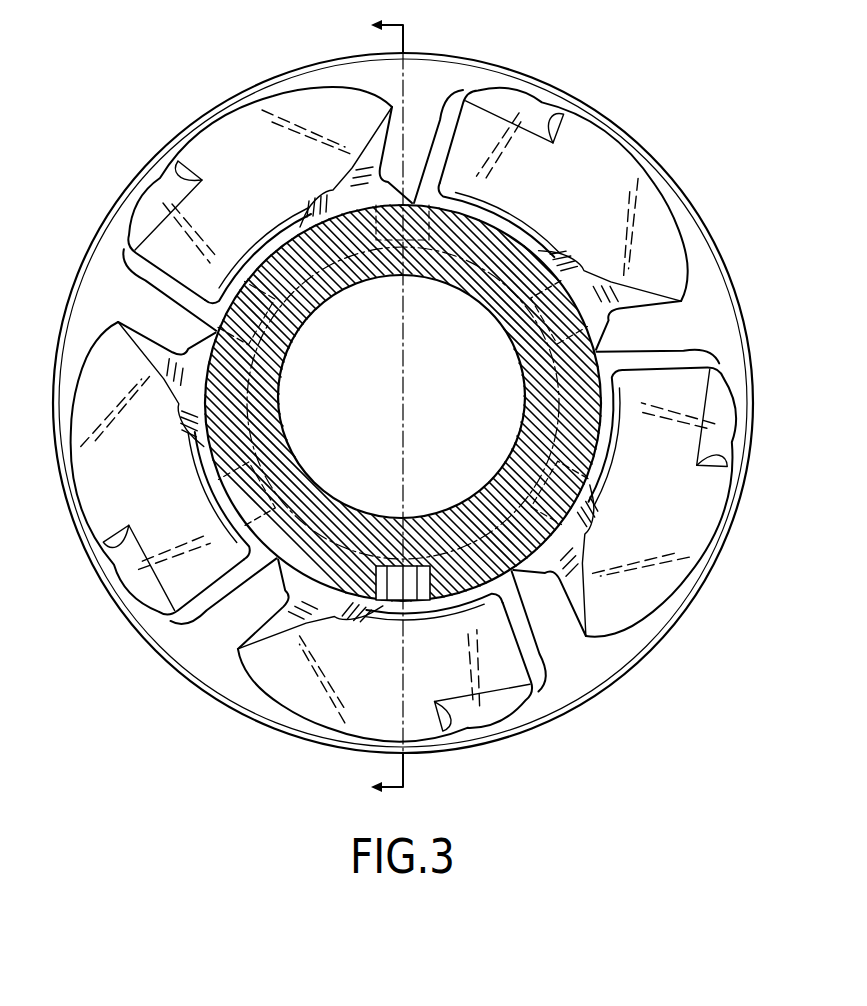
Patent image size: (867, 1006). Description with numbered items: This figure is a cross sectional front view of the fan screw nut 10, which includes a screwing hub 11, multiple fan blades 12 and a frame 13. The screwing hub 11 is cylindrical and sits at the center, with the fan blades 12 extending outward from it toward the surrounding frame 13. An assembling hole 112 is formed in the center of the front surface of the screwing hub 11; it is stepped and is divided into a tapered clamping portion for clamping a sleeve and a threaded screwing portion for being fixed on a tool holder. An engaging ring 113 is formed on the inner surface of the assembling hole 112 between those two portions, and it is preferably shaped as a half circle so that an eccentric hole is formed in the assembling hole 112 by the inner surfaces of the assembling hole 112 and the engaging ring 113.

The fan screw nut 10 is at (414, 417).
The screwing hub 11 is at (436, 388).
The fan blades 12 is at (645, 593).
The frame 13 is at (628, 653).
The assembling hole 112 is at (463, 316).
The engaging ring 113 is at (272, 413).